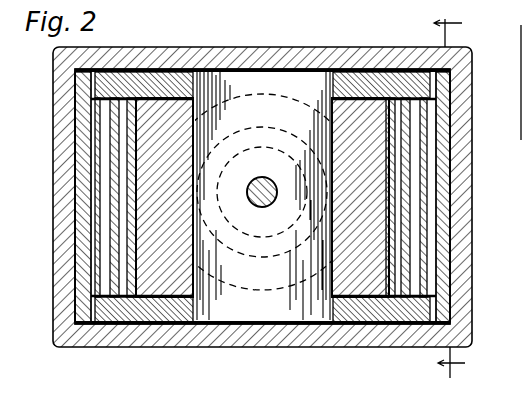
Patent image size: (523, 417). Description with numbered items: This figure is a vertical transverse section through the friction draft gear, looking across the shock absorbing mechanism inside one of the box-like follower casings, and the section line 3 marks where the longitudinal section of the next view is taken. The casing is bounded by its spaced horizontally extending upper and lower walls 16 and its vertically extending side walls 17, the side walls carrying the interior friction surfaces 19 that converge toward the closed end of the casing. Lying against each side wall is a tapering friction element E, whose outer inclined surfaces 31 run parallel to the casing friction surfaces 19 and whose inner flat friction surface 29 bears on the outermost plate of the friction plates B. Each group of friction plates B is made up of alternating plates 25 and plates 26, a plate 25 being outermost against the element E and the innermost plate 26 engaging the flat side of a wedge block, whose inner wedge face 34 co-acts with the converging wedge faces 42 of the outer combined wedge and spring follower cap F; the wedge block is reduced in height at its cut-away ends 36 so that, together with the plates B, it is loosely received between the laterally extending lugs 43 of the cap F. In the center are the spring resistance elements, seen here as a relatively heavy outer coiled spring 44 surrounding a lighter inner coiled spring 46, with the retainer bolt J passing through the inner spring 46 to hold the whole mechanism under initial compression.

The upper and lower walls 16 is at (182, 50).
The side walls 17 is at (60, 212).
The interior friction surfaces 19 is at (63, 245).
The inner flat friction surface 29 is at (80, 277).
The oppositely extending inclined surfaces 31 is at (78, 258).
The tapering friction element E is at (445, 168).
The laterally extending lugs 43 is at (125, 88).
The cut-away upper and lower ends of wedge block 36 is at (158, 78).
The inner wedge face 34 is at (185, 300).
The friction plate 25 is at (425, 322).
The friction plate 26 is at (62, 310).
The friction plates B is at (105, 116).
The retainer bolt J is at (262, 205).
The converging wedge faces 42 is at (335, 262).
The inner coiled spring 46 is at (277, 162).
The outer coiled spring 44 is at (252, 98).
The outer combined wedge and spring follower cap F is at (319, 77).
The section line 3— 3 is at (449, 201).